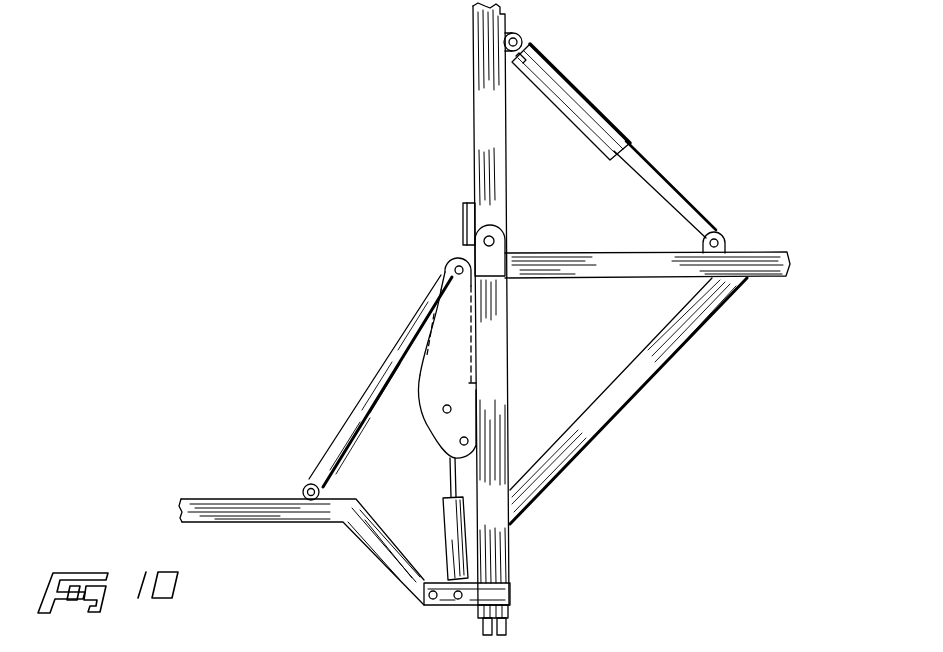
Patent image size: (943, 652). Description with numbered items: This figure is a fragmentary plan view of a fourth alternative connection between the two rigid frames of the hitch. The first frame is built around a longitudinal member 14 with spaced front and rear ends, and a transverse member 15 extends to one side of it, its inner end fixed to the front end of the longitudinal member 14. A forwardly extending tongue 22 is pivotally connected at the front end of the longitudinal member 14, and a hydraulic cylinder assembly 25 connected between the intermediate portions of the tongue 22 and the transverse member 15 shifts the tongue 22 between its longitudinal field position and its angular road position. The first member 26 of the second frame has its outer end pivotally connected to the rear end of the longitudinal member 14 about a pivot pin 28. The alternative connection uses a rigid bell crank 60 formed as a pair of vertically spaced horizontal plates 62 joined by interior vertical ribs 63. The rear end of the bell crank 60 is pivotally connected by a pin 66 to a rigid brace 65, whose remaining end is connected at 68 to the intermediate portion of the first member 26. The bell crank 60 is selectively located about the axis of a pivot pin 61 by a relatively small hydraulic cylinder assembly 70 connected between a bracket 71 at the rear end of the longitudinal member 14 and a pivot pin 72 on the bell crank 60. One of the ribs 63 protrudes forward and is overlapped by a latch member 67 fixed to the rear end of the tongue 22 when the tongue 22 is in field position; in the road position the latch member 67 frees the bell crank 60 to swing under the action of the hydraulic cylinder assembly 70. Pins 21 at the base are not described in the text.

The longitudinal member 14 is at (507, 409).
The transverse member 15 is at (625, 251).
The mounting pins 21 is at (505, 626).
The tongue 22 is at (507, 160).
The hydraulic cylinder assembly 25 is at (577, 88).
The first member 26 is at (252, 497).
The pivot pin 28 is at (424, 597).
The bell crank 60 is at (424, 428).
The pivot pin 61 is at (460, 442).
The horizontal plates 62 is at (428, 406).
The vertical ribs 63 is at (427, 360).
The brace 65 is at (362, 403).
The pin 66 is at (454, 267).
The latch member 67 is at (462, 206).
The connection 68 is at (306, 487).
The hydraulic cylinder assembly 70 is at (441, 515).
The bracket 71 is at (461, 601).
The pivot pin 72 is at (452, 404).